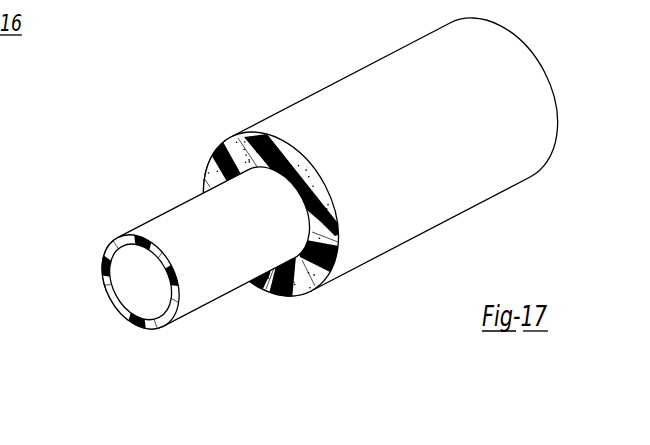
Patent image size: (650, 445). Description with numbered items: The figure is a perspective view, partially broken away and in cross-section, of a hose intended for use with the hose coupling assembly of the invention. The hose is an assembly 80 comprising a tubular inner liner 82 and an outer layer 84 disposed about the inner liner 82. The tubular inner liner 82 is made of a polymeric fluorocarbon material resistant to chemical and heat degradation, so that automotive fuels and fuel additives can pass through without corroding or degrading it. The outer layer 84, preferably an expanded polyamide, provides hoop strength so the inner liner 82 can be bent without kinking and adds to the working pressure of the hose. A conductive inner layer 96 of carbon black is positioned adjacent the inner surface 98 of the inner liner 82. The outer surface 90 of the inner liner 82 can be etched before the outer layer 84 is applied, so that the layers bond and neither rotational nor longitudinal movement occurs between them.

The hose assembly 80 is at (207, 122).
The tubular inner liner 82 is at (99, 262).
The outer layer 84 is at (341, 87).
The outer surface 90 is at (167, 216).
The inner layer 96 is at (142, 289).
The inner surface 98 is at (164, 325).